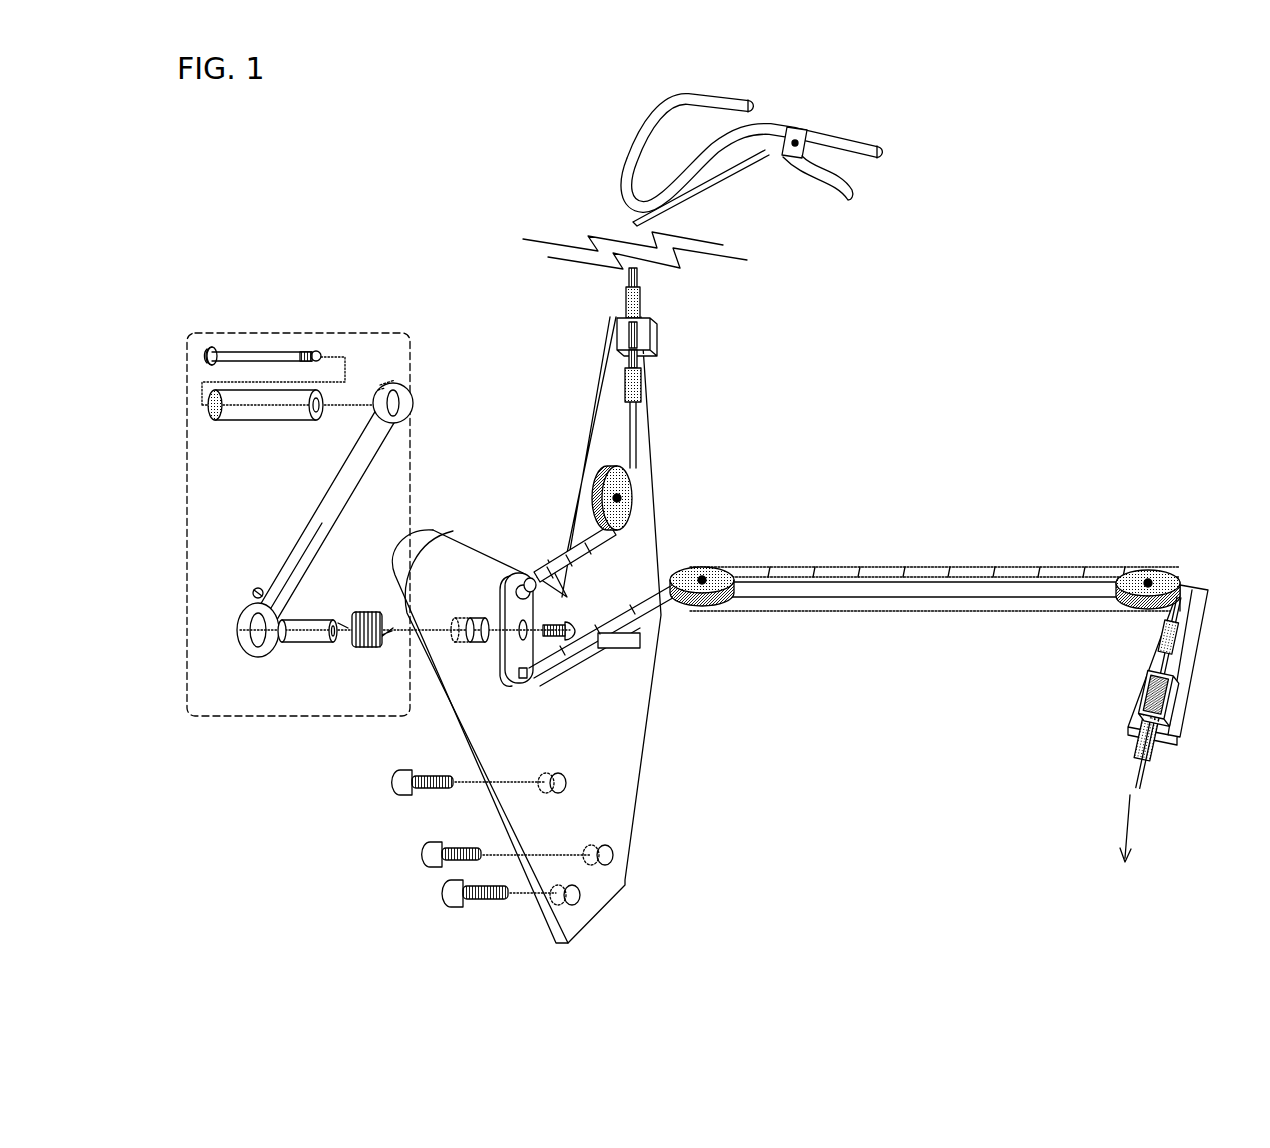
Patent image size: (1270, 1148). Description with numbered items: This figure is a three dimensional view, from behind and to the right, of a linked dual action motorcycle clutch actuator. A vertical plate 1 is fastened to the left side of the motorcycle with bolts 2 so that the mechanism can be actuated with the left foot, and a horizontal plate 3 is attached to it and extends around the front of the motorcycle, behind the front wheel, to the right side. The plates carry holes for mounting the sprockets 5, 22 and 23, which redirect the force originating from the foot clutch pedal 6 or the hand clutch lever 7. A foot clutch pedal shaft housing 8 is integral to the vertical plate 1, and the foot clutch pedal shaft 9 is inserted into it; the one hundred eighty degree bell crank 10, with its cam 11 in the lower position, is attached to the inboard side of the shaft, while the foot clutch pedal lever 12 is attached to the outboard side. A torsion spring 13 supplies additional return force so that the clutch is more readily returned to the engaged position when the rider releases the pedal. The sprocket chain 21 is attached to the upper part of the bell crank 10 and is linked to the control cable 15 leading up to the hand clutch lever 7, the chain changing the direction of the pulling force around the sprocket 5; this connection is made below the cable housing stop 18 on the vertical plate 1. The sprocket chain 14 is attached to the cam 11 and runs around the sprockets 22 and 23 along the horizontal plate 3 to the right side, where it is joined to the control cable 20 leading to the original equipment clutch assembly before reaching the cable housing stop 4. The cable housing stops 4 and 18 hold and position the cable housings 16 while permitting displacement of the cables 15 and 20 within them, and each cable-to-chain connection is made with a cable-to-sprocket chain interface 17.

The vertical plate 1 is at (585, 443).
The bolts 2 is at (448, 895).
The horizontal plate 3 is at (1148, 665).
The cable housing stop 4 is at (1147, 695).
The sprocket 5 is at (622, 506).
The foot clutch pedal 6 is at (298, 333).
The hand clutch lever 7 is at (832, 185).
The foot clutch pedal shaft housing 8 is at (482, 622).
The foot clutch pedal shaft 9 is at (312, 636).
The 180 degree bell crank 10 is at (513, 610).
The cam 11 is at (522, 687).
The foot clutch pedal lever 12 is at (287, 556).
The torsion spring 13 is at (368, 610).
The sprocket chain 14 is at (945, 565).
The control cable 15 is at (638, 280).
The cable housing 16 is at (625, 297).
The cable-to-sprocket chain interface 17 is at (643, 380).
The cable housing stop 18 is at (657, 334).
The control cable 20 is at (1155, 785).
The sprocket chain 21 is at (554, 562).
The sprocket 22 is at (708, 570).
The sprocket 23 is at (1157, 568).